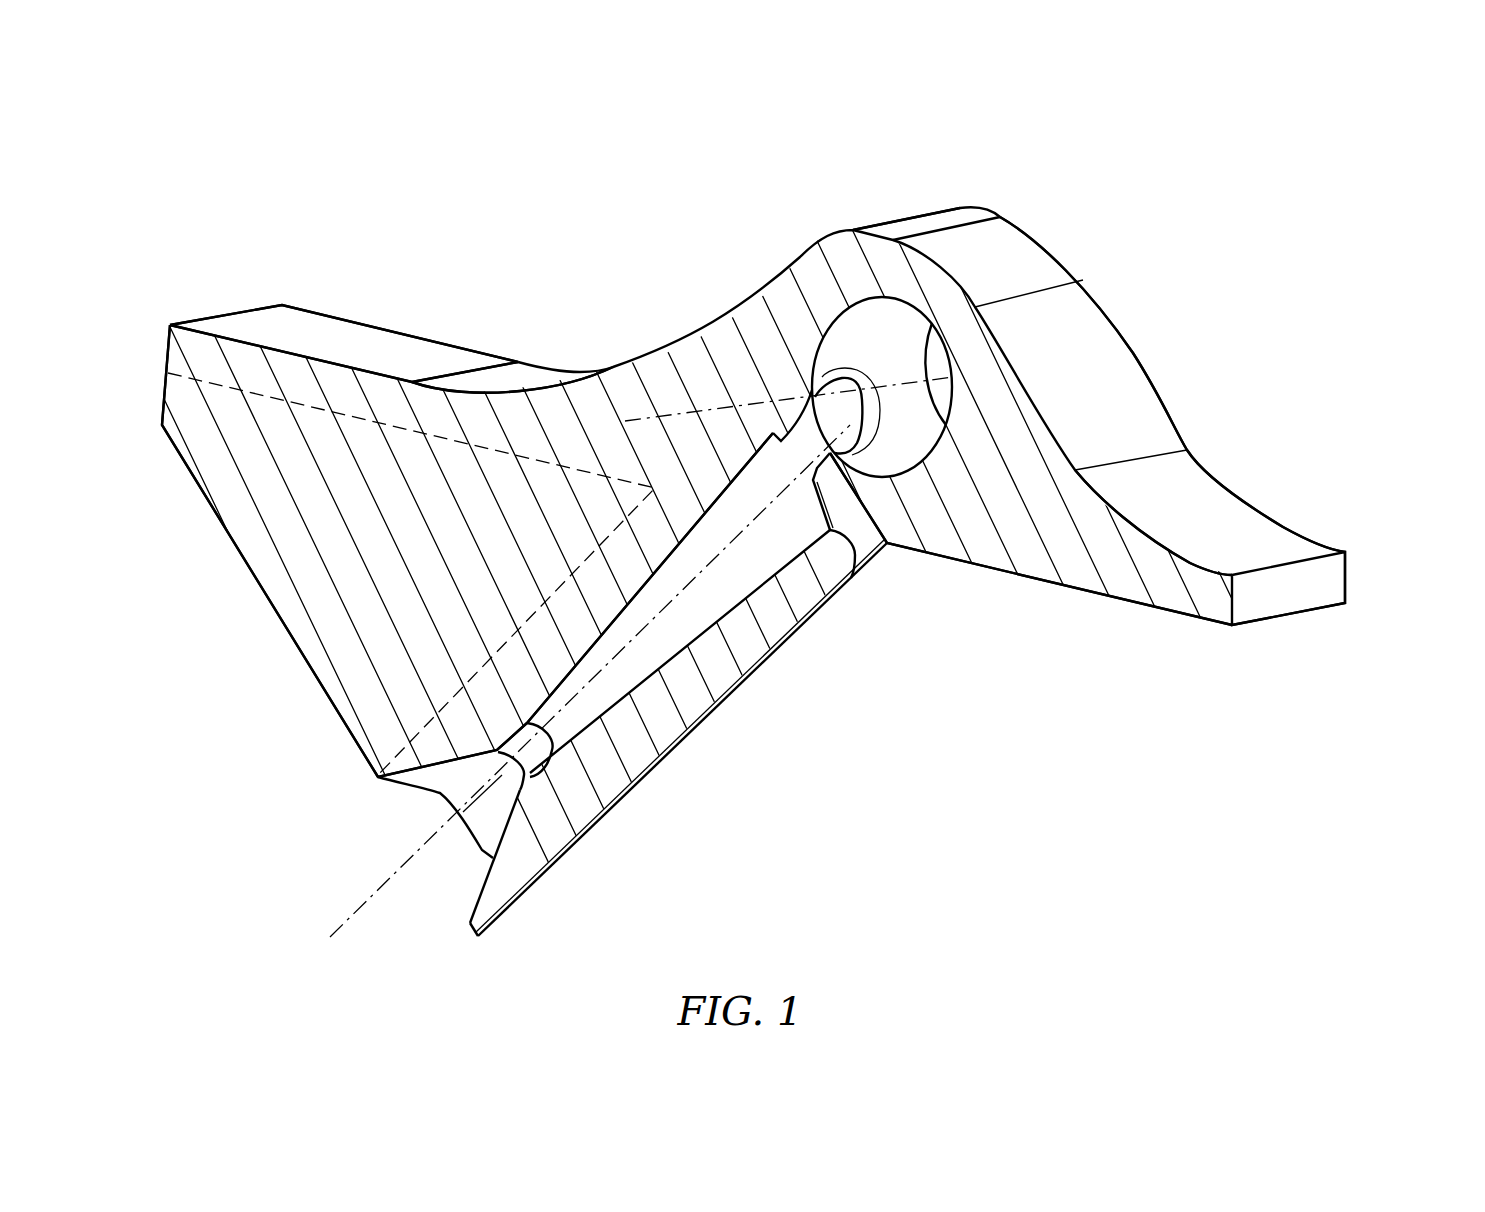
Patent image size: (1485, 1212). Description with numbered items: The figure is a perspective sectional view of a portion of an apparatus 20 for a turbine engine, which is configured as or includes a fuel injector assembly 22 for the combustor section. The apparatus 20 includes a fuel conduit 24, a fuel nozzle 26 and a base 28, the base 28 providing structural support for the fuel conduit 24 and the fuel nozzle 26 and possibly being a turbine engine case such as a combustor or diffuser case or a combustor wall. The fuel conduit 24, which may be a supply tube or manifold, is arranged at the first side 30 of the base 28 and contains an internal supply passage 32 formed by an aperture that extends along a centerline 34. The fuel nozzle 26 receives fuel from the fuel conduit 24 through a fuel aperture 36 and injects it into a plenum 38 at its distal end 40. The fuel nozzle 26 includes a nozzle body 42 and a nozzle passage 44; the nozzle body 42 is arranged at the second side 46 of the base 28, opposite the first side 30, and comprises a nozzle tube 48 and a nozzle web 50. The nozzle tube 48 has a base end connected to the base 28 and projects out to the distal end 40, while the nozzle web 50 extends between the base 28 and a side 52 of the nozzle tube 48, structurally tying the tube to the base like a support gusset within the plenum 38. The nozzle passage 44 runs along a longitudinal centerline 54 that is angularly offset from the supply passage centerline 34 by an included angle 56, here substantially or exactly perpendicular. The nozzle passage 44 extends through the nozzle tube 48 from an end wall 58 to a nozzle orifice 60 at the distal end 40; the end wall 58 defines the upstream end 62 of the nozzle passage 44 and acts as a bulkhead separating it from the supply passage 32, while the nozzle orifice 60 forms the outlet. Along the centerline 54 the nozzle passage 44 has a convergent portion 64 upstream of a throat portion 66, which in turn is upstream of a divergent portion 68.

The apparatus 20 is at (1068, 190).
The fuel injector assembly 22 is at (228, 822).
The fuel conduit 24 is at (1082, 262).
The fuel nozzle 26 is at (652, 797).
The base 28 is at (400, 333).
The first side 30 is at (483, 362).
The supply passage 32 is at (857, 322).
The centerline 34 is at (768, 406).
The fuel aperture 36 is at (806, 452).
The plenum 38 is at (194, 1003).
The distal end 40 is at (472, 950).
The nozzle body 42 is at (679, 736).
The nozzle passage 44 is at (672, 632).
The second side 46 is at (1300, 624).
The nozzle tube 48 is at (573, 847).
The nozzle web 50 is at (265, 598).
The side 52 is at (360, 767).
The longitudinal centerline 54 is at (330, 928).
The included angle 56 is at (800, 403).
The end wall 58 is at (866, 550).
The nozzle orifice 60 is at (462, 877).
The interior/upstream end 62 is at (851, 512).
The convergent portion 64 is at (722, 593).
The throat portion 66 is at (462, 817).
The divergent portion 68 is at (492, 816).